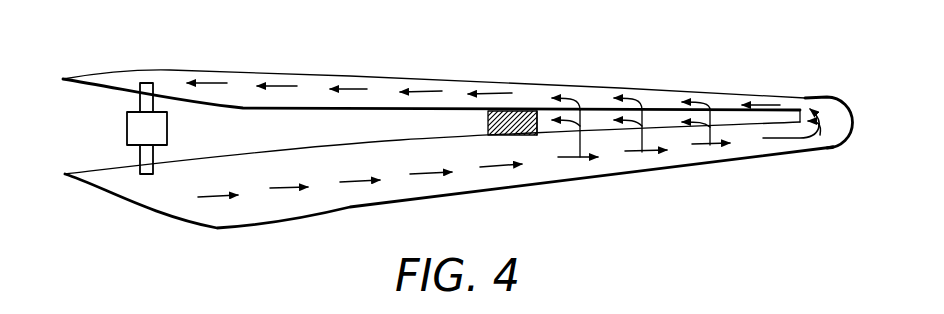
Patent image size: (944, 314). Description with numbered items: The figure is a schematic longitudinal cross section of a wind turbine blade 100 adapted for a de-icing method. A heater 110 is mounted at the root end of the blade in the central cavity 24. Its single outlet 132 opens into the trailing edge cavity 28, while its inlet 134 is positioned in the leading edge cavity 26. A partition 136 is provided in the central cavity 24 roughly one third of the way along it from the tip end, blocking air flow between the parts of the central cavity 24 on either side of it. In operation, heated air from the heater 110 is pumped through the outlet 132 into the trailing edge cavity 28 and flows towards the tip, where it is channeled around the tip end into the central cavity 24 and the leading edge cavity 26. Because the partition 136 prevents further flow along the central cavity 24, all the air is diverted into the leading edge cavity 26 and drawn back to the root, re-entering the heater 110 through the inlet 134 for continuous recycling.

The blade 100 is at (808, 81).
The heater 110 is at (132, 128).
The outlet 132 is at (148, 175).
The inlet 134 is at (147, 87).
The partition 136 is at (507, 111).
The central cavity 24 is at (325, 132).
The leading edge cavity 26 is at (313, 87).
The trailing edge cavity 28 is at (467, 182).